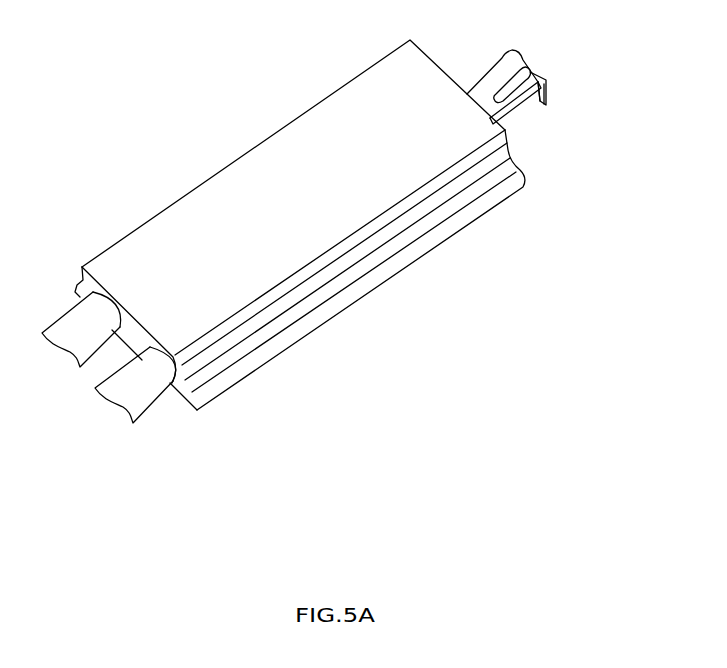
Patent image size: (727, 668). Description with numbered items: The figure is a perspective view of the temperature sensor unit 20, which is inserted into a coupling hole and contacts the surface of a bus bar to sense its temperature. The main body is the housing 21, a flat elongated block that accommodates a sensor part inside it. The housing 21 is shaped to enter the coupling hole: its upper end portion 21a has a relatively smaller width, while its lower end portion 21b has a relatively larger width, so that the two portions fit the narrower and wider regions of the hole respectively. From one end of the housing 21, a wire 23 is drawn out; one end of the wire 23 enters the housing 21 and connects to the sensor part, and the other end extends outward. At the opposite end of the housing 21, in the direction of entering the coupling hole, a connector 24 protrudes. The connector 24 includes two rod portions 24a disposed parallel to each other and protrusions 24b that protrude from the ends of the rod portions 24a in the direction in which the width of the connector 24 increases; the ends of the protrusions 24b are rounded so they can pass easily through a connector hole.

The temperature sensor unit 20 is at (360, 256).
The housing 21 is at (348, 261).
The upper end portion 21a is at (332, 217).
The lower end portion 21b is at (340, 288).
The wire 23 is at (150, 392).
The connector 24 is at (573, 101).
The rod portions 24a is at (515, 108).
The protrusions 24b is at (548, 87).